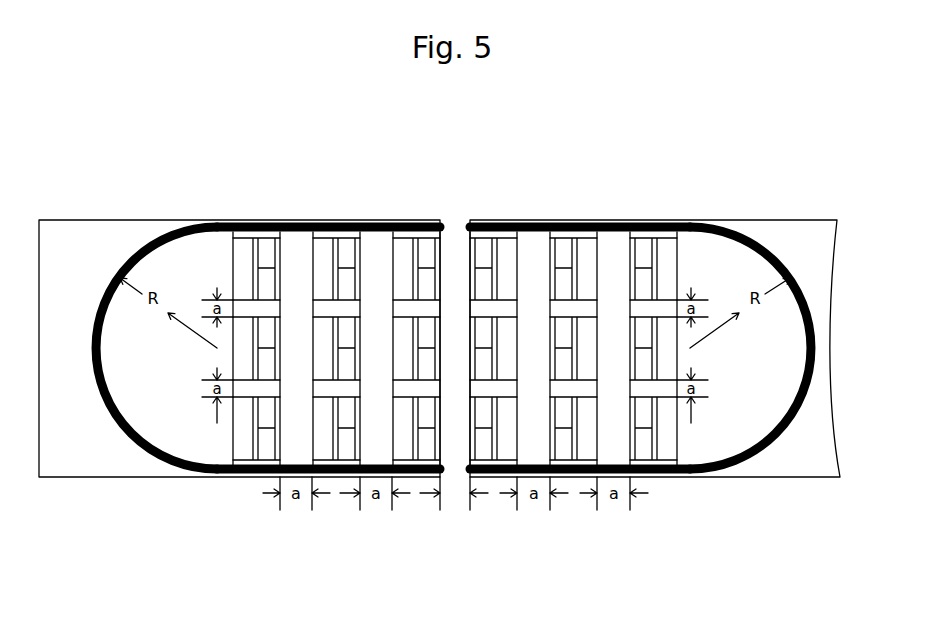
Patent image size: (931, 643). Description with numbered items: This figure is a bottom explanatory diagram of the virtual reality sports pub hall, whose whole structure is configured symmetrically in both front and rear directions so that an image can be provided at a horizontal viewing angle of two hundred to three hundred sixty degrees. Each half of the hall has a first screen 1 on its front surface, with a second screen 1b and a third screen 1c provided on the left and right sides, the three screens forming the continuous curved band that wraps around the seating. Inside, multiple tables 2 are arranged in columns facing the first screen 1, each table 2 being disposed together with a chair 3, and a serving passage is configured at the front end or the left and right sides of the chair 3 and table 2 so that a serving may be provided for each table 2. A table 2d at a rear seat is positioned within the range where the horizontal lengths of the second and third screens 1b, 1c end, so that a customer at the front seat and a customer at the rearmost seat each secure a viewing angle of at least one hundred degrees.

The first screen 1 is at (150, 452).
The second screen 1b is at (301, 223).
The third screen 1c is at (253, 473).
The table 2 is at (240, 259).
The table at a rear seat 2d is at (403, 223).
The chair 3 is at (263, 245).